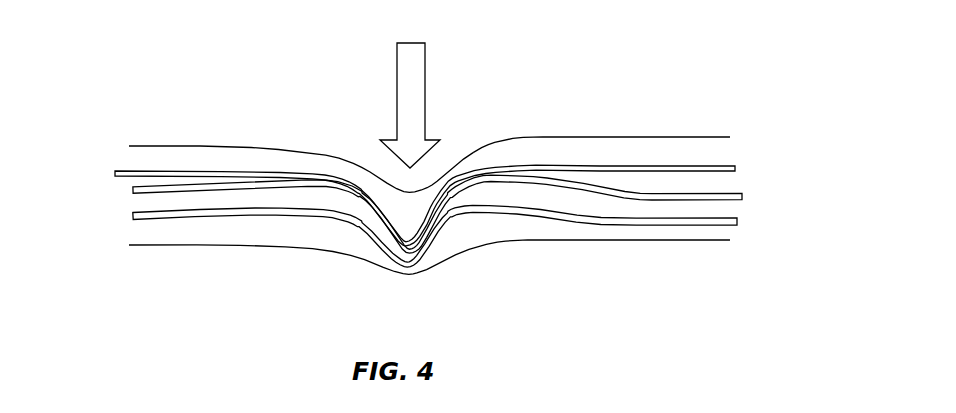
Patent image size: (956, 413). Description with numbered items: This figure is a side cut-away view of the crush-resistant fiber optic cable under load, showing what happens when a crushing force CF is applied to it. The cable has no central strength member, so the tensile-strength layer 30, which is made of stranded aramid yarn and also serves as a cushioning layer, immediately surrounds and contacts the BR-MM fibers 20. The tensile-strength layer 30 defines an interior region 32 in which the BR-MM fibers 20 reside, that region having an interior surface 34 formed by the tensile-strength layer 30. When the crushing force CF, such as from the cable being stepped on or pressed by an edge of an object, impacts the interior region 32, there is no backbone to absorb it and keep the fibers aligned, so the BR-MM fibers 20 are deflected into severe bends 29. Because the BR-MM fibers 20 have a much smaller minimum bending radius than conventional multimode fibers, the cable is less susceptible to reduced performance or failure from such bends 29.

The BR-MM fibers 20 is at (674, 224).
The bends 29 is at (394, 264).
The tensile-strength layer 30 is at (183, 113).
The interior region 32 is at (340, 157).
The interior surface 34 is at (531, 134).
The crushing force CF is at (425, 77).